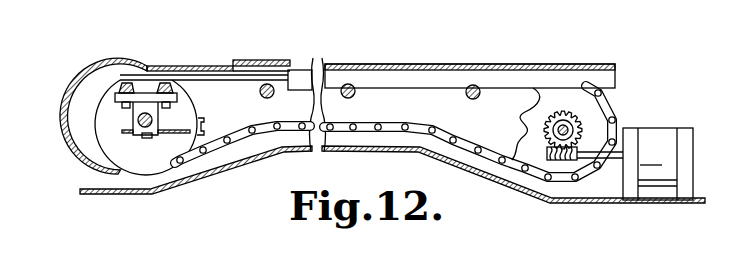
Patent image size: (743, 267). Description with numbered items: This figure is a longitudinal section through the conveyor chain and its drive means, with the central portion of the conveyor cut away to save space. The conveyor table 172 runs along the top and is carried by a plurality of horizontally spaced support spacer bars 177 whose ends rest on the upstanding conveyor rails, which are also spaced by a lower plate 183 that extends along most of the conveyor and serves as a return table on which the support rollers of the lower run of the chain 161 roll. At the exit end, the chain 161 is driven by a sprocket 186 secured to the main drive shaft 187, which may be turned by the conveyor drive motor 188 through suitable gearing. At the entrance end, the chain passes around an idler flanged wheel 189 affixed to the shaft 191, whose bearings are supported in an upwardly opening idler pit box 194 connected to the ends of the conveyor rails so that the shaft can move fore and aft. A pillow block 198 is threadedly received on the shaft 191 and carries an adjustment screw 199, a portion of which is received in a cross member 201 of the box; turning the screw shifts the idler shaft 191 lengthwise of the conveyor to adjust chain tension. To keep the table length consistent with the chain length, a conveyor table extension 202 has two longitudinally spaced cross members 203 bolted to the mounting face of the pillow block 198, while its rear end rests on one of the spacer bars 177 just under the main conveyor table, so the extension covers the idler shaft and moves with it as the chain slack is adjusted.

The chain 161 is at (362, 123).
The conveyor table 172 is at (411, 65).
The support spacer bars 177 is at (264, 96).
The lower plate 183 is at (335, 152).
The sprocket 186 is at (518, 108).
The main drive shaft 187 is at (567, 127).
The conveyor drive motor 188 is at (664, 135).
The idler flanged wheel 189 is at (110, 150).
The shaft 191 is at (140, 112).
The idler pit box 194 is at (718, 1).
The pillow block 198 is at (131, 121).
The adjustment screw 199 is at (170, 137).
The cross member 201 is at (204, 118).
The conveyor table extension 202 is at (137, 68).
The cross members 203 is at (155, 82).